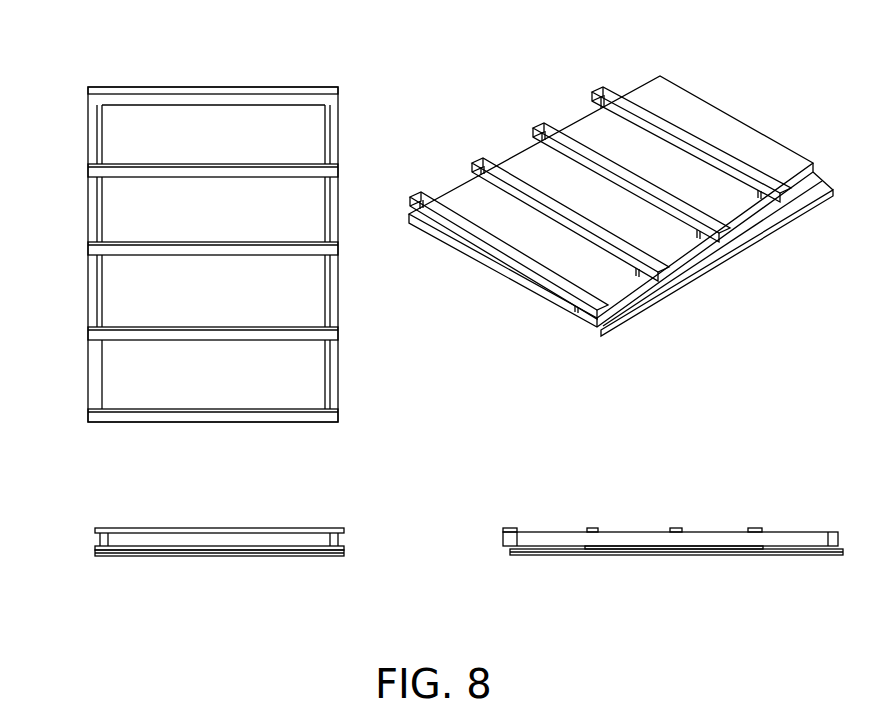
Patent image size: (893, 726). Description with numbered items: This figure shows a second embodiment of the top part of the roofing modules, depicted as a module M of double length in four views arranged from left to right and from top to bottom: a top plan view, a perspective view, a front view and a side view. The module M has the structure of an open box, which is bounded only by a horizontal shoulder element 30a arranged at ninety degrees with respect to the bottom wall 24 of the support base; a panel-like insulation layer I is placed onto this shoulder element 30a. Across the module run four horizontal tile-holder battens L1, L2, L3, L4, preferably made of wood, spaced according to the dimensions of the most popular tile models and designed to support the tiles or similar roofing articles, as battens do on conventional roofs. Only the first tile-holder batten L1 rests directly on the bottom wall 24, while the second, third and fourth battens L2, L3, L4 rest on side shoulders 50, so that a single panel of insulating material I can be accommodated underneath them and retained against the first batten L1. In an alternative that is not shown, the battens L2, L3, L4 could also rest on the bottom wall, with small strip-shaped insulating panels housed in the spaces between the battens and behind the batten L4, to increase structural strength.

The panel-like insulation layer I is at (273, 125).
The module M is at (352, 82).
The bottom wall 24 is at (340, 382).
The horizontal shoulder element 30a is at (310, 422).
The side shoulders 50 is at (692, 245).
The first tile-holder batten L1 is at (105, 415).
The second tile-holder batten L2 is at (100, 333).
The third tile-holder batten L3 is at (100, 248).
The fourth tile-holder batten L4 is at (100, 170).